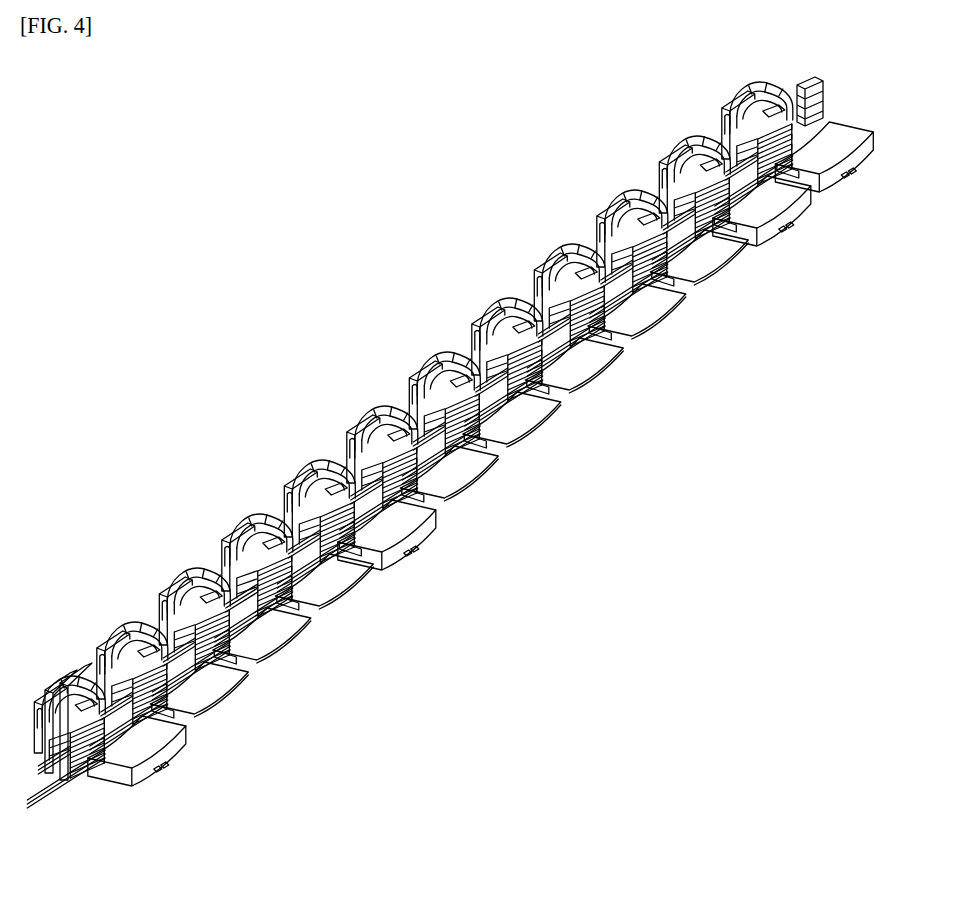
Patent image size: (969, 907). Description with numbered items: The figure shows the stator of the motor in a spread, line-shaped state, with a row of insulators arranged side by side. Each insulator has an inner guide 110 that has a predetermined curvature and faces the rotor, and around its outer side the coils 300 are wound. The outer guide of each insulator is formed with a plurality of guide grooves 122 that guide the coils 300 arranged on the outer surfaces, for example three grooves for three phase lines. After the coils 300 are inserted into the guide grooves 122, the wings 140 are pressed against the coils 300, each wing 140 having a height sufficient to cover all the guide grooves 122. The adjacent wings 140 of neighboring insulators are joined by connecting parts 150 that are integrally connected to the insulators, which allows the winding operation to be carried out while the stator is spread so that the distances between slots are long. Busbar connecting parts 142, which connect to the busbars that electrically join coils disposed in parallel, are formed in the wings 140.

The inner guide 110 is at (430, 375).
The coil 300 is at (496, 302).
The guide groove 122 is at (75, 770).
The wing 140 is at (118, 768).
The busbar connecting part 142 is at (160, 770).
The connecting part 150 is at (200, 720).